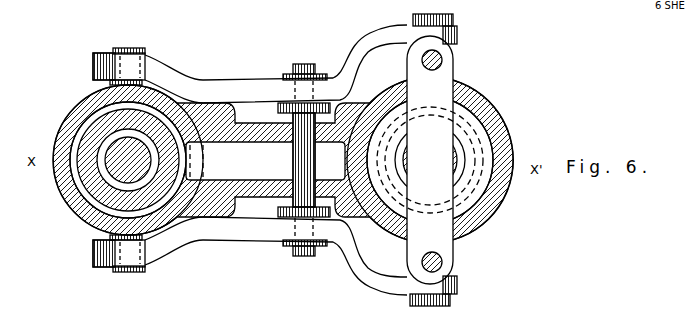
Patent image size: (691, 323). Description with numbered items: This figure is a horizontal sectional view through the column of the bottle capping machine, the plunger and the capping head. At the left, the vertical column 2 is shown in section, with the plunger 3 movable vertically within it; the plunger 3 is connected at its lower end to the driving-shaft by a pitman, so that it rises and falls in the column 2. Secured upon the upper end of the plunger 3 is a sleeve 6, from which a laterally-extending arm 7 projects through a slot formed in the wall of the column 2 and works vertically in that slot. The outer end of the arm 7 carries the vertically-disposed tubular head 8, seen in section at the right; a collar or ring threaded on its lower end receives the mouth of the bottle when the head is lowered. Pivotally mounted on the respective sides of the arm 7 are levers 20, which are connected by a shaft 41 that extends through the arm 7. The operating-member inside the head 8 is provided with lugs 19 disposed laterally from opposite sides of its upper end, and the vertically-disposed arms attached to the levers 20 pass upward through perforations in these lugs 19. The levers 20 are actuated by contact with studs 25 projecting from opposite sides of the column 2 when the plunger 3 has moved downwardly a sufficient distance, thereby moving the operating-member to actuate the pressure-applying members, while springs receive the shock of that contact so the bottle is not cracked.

The vertical column 2 is at (58, 183).
The plunger 3 is at (117, 177).
The sleeve 6 is at (160, 230).
The laterally-extending arm 7 is at (258, 193).
The tubular head 8 is at (502, 215).
The lugs 19 is at (467, 277).
The levers 20 is at (343, 258).
The studs 25 is at (115, 28).
The shaft 41 is at (300, 160).